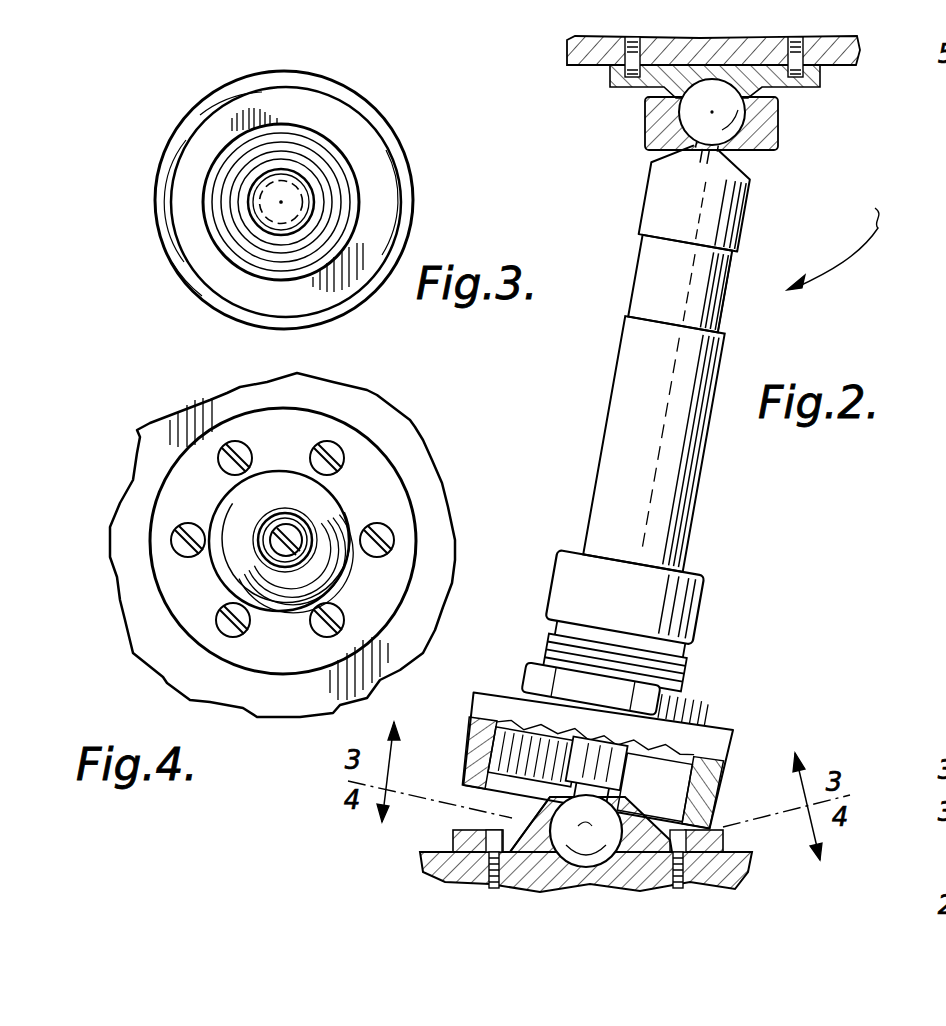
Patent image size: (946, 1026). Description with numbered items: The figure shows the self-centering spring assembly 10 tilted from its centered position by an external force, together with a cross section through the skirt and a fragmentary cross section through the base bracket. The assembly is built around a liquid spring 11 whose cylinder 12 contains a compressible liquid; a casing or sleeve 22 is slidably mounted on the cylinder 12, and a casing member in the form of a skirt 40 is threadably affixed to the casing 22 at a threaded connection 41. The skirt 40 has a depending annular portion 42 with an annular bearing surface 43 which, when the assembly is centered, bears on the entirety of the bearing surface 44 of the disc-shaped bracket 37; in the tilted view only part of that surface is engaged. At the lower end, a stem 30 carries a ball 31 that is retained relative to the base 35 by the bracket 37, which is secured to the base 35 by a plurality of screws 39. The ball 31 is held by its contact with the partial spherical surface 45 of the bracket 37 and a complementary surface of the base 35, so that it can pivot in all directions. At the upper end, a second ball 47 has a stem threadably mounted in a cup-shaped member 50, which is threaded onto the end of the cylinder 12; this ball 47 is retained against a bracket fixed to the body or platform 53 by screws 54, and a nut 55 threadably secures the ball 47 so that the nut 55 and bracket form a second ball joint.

In FIG. 2, the self-centering spring assembly 10 is at (843, 233).
In FIG. 2, the liquid spring 11 is at (722, 305).
In FIG. 2, the cylinder 12 is at (647, 288).
In FIG. 2, the casing or sleeve 22 is at (703, 478).
In FIG. 4, the stem 30 is at (275, 553).
In FIG. 2, the stem 30 is at (615, 694).
In FIG. 2, the ball 31 is at (577, 842).
In FIG. 4, the base 35 is at (432, 497).
In FIG. 2, the base 35 is at (737, 868).
In FIG. 3, the disc-shaped bracket or base member 37 is at (268, 188).
In FIG. 4, the disc-shaped bracket or base member 37 is at (275, 513).
In FIG. 2, the disc-shaped bracket or base member 37 is at (463, 836).
In FIG. 4, the screws 39 is at (180, 530).
In FIG. 2, the screws 39 is at (497, 892).
In FIG. 3, the skirt 40 is at (367, 303).
In FIG. 2, the skirt 40 is at (477, 692).
In FIG. 2, the threaded connection 41 is at (703, 697).
In FIG. 3, the depending annular portion 42 is at (157, 212).
In FIG. 3, the annular bearing surface 43 is at (337, 92).
In FIG. 2, the annular bearing surface 43 is at (462, 788).
In FIG. 4, the bearing surface 44 is at (320, 513).
In FIG. 2, the bearing surface 44 is at (530, 823).
In FIG. 2, the partial spherical surface 45 is at (603, 887).
In FIG. 2, the second ball 47 is at (728, 122).
In FIG. 2, the cup-shaped member 50 is at (663, 192).
In FIG. 2, the body or platform 53 is at (857, 52).
In FIG. 2, the screws 54 is at (632, 83).
In FIG. 2, the nut 55 is at (646, 128).